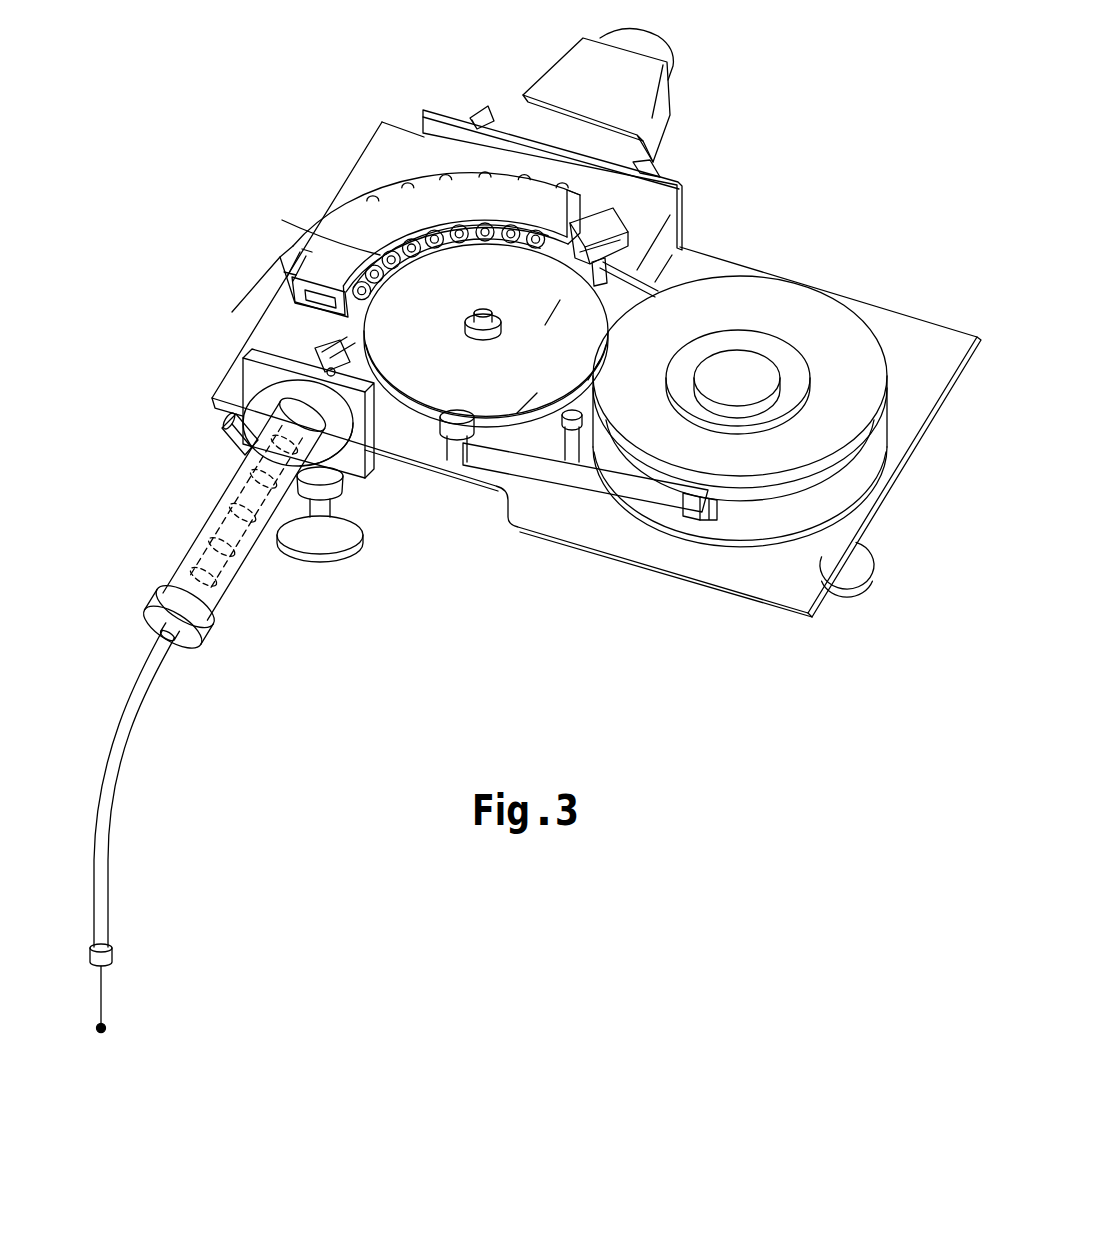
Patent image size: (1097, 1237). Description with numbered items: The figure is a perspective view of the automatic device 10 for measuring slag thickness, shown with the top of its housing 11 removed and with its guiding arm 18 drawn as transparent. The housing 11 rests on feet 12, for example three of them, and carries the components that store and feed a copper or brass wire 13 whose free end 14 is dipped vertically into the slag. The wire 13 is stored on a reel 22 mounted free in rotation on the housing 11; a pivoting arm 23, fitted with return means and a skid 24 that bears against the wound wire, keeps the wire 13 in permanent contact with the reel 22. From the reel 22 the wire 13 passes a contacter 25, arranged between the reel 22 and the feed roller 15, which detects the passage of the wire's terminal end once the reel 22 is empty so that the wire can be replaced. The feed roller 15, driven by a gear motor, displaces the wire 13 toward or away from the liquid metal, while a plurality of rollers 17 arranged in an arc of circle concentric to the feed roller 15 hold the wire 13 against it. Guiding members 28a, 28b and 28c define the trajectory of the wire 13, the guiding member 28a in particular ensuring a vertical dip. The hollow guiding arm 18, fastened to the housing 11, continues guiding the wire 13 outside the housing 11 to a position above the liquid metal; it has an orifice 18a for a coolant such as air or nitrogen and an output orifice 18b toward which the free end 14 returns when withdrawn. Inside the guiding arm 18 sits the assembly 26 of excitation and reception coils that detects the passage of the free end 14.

The device for measuring the thickness of the slag 10 is at (352, 133).
The housing 11 is at (928, 367).
The feet 12 is at (328, 545).
The wire 13 is at (103, 1002).
The free end 14 is at (104, 1028).
The feed roller 15 is at (412, 308).
The rollers 17 is at (282, 220).
The hollow guiding arm 18 is at (190, 548).
The orifice 18a is at (220, 423).
The output orifice 18b is at (156, 648).
The reel 22 is at (832, 337).
The arm 23 is at (580, 480).
The skid 24 is at (707, 512).
The contacter 25 is at (628, 240).
The assembly of the excitation and reception coils 26 is at (232, 580).
The guiding member 28a is at (132, 740).
The guiding member 28b is at (326, 374).
The guiding member 28c is at (660, 272).